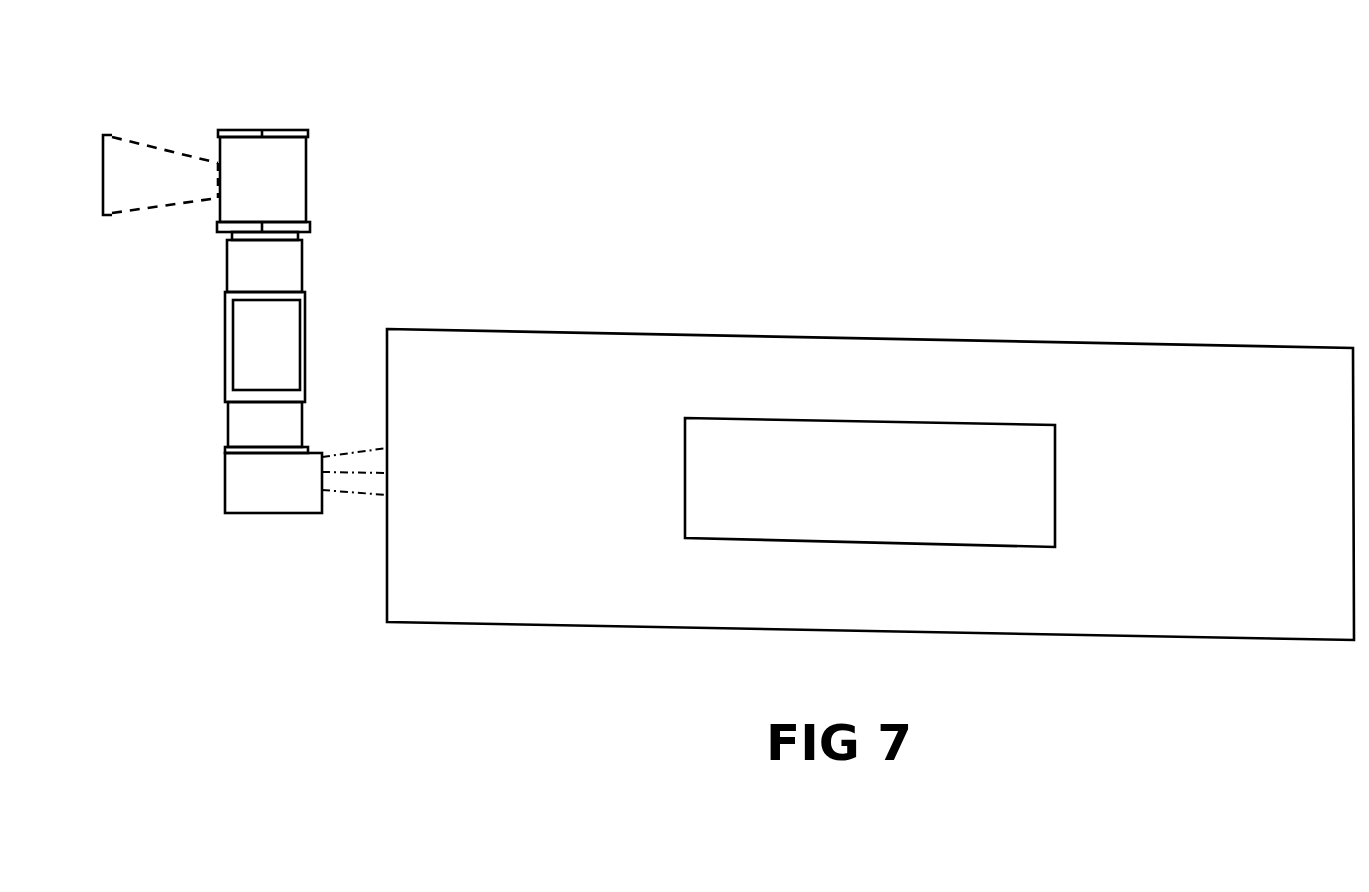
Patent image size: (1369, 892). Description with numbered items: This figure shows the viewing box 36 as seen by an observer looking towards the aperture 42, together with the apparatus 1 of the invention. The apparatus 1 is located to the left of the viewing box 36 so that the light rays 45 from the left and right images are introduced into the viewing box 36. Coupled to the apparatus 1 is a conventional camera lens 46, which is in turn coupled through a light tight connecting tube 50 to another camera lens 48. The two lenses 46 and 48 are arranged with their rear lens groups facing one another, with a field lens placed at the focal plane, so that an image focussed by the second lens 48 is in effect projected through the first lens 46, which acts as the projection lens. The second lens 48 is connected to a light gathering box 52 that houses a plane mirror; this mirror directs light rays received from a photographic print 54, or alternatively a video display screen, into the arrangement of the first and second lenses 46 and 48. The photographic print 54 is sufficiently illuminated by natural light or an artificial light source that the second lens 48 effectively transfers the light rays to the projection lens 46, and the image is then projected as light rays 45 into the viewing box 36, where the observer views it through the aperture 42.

The apparatus 1 is at (280, 513).
The viewing box 36 is at (1142, 345).
The aperture 42 is at (1023, 513).
The light rays 45 is at (357, 493).
The camera lens 46 is at (295, 425).
The camera lens 48 is at (300, 263).
The light tight connecting tube 50 is at (305, 330).
The light gathering box 52 is at (308, 175).
The photographic print 54 is at (98, 148).